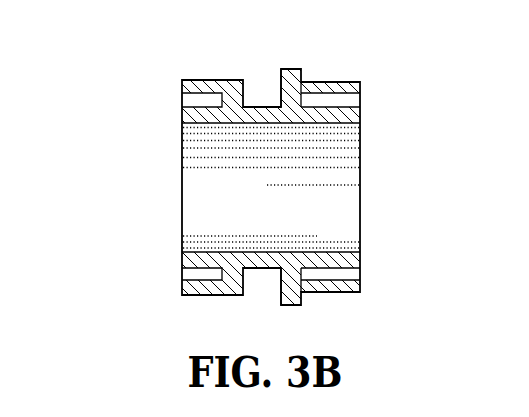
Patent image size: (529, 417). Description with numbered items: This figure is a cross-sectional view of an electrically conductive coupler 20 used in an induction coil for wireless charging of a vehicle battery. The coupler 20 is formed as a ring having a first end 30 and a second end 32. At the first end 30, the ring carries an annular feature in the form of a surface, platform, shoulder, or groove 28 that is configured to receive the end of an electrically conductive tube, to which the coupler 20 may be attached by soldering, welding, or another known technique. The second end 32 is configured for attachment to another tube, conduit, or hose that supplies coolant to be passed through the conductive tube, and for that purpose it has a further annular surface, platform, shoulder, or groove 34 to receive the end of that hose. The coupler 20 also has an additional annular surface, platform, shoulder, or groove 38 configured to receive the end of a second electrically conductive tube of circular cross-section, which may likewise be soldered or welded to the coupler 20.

The electrically conductive coupler 20 is at (378, 65).
The groove 28 is at (375, 103).
The first end 30 is at (362, 168).
The second end 32 is at (182, 202).
The groove 34 is at (175, 108).
The groove 38 is at (312, 75).